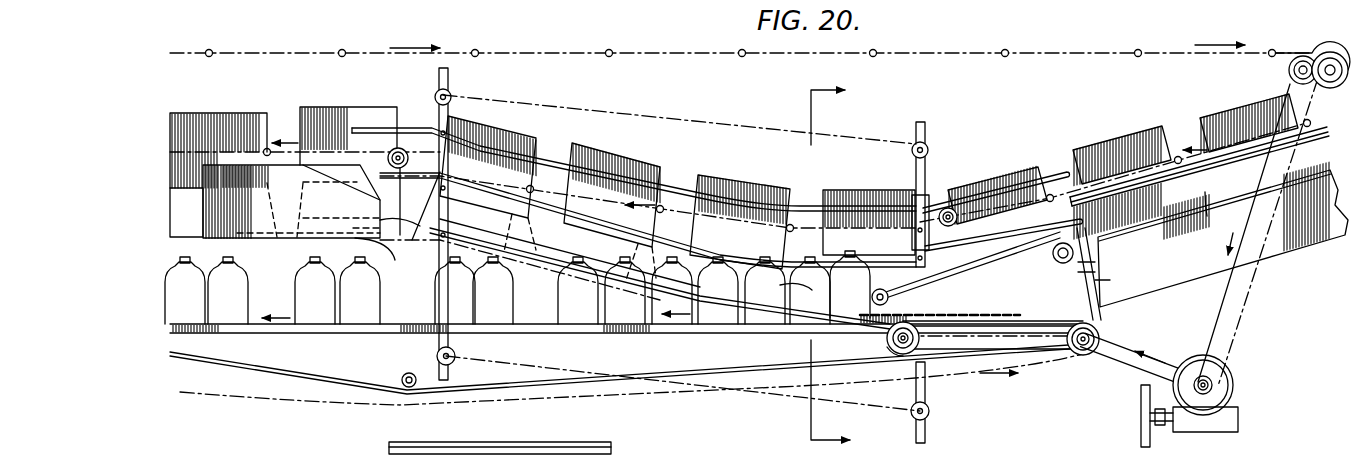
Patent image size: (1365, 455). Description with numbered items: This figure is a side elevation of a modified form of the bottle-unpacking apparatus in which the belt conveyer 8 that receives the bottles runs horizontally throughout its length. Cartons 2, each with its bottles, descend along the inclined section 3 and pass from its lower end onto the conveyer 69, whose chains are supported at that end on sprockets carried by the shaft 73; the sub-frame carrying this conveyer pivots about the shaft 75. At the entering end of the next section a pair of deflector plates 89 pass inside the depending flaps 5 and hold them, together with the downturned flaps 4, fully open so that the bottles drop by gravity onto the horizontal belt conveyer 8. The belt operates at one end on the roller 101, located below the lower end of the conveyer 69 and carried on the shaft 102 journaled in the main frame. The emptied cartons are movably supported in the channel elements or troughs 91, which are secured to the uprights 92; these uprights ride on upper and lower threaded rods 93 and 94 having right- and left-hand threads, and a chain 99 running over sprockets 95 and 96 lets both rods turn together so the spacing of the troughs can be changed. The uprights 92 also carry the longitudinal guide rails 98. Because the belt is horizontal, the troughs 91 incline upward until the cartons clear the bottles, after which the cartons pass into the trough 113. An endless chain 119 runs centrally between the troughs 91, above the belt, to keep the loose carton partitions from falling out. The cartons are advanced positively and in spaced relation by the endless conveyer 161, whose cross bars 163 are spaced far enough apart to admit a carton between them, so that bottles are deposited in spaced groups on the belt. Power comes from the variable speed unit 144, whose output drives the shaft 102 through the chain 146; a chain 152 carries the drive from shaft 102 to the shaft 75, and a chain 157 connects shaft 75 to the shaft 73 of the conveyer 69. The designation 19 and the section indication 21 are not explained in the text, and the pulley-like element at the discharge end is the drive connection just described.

The carton 2 is at (215, 125).
The section 3 is at (1262, 272).
The downturned flap 4 is at (300, 224).
The depending flap 5 is at (190, 237).
The belt conveyer 8 is at (325, 378).
The inclined panel 19 is at (1180, 270).
The section line 21 is at (996, 268).
The conveyer 69 is at (958, 270).
The shaft 73 is at (1090, 254).
The shaft 75 is at (1083, 355).
The deflector plate 89 is at (1088, 273).
The channel element (trough) 91 is at (547, 263).
The upright 92 is at (439, 74).
The threaded rod 93 is at (447, 99).
The threaded rod 94 is at (456, 356).
The sprocket 95 is at (435, 94).
The sprocket 96 is at (437, 356).
The guide rail 98 is at (675, 186).
The chain 99 is at (662, 117).
The roller 101 is at (903, 356).
The shaft 102 is at (887, 338).
The trough 113 is at (283, 232).
The endless chain 119 is at (428, 246).
The variable speed unit 144 is at (1292, 418).
The chain 146 is at (1138, 372).
The chain 152 is at (980, 321).
The chain 157 is at (1098, 304).
The endless conveyer 161 is at (572, 53).
The cross bar 163 is at (342, 53).